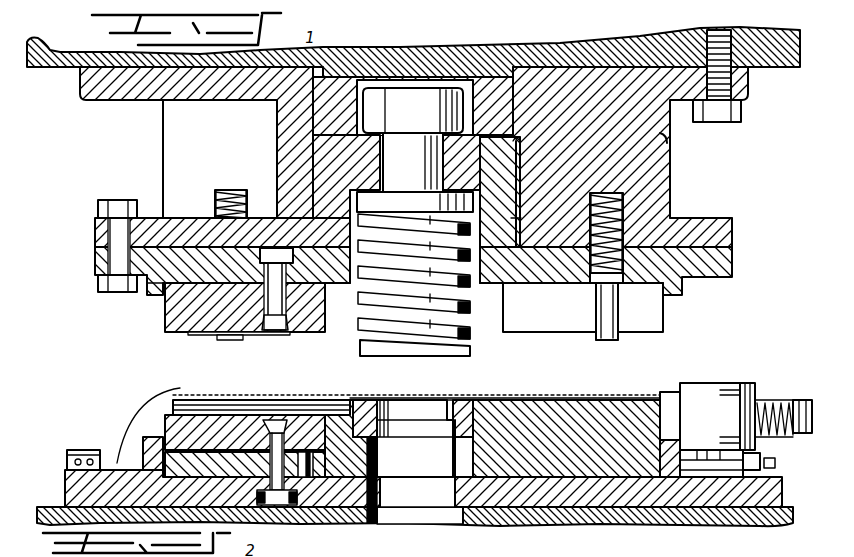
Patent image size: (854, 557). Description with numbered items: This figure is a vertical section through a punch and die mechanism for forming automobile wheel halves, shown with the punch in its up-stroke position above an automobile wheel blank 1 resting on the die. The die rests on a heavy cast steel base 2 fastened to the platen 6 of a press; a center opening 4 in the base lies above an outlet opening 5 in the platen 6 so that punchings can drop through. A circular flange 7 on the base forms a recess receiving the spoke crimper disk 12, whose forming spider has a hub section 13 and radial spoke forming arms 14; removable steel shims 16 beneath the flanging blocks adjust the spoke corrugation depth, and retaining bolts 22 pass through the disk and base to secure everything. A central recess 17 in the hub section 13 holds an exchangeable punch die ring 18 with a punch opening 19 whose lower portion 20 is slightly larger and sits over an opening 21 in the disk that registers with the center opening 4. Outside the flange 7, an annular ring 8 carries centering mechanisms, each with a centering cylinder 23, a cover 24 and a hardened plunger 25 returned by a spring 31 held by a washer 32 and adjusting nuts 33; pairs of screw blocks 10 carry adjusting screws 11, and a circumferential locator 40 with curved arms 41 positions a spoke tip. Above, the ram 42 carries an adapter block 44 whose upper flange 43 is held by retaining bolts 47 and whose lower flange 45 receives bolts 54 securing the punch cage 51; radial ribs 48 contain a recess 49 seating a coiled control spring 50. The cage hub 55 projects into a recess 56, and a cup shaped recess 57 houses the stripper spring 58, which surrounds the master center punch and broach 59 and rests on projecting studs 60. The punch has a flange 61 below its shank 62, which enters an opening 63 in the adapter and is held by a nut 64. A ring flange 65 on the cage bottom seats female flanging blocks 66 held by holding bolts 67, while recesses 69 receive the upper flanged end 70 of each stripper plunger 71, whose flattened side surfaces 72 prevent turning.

The automobile wheel blank 1 is at (294, 397).
The base 2 is at (720, 493).
The center opening 4 is at (373, 507).
The outlet opening 5 is at (463, 513).
The platen 6 is at (570, 516).
The circular flange 7 is at (143, 440).
The annular ring 8 is at (107, 462).
The screw blocks 10 is at (72, 457).
The adjusting screw 11 is at (776, 462).
The spoke crimper disk 12 is at (232, 430).
The hub section 13 is at (338, 403).
The spoke forming arms 14 is at (262, 398).
The steel shims 16 is at (323, 452).
The central recess 17 is at (467, 427).
The punch die ring 18 is at (370, 403).
The punch opening 19 is at (424, 407).
The lower portion of punch opening 20 is at (428, 430).
The opening 21 is at (453, 460).
The retaining bolts 22 is at (313, 477).
The centering cylinder 23 is at (697, 397).
The cover 24 is at (747, 383).
The plunger 25 is at (668, 392).
The spring 31 is at (768, 434).
The washer 32 is at (803, 400).
The adjusting nuts 33 is at (807, 392).
The circumferential locator 40 is at (511, 552).
The curved arms 41 is at (143, 420).
The ram 42 is at (620, 40).
The upper flange 43 is at (104, 97).
The adapter block 44 is at (277, 118).
The lower flange 45 is at (152, 200).
The retaining bolts 47 is at (713, 118).
The ribs 48 is at (163, 128).
The recess 49 is at (207, 191).
The coiled control spring 50 is at (235, 188).
The punch cage 51 is at (185, 247).
The bolts 54 is at (108, 208).
The hub 55 is at (520, 140).
The recess 56 is at (523, 178).
The cup shaped recess 57 is at (513, 221).
The stripper spring 58 is at (466, 290).
The master center punch and broach 59 is at (410, 262).
The projecting studs 60 is at (382, 236).
The flange 61 is at (353, 200).
The shank 62 is at (413, 162).
The opening 63 is at (357, 80).
The nut 64 is at (397, 107).
The ring flange 65 is at (157, 295).
The female flanging blocks 66 is at (178, 308).
The holding bolts 67 is at (272, 270).
The recesses 69 is at (732, 250).
The upper flanged end 70 is at (590, 278).
The stripper plunger 71 is at (620, 307).
The flattened side surfaces 72 is at (605, 337).